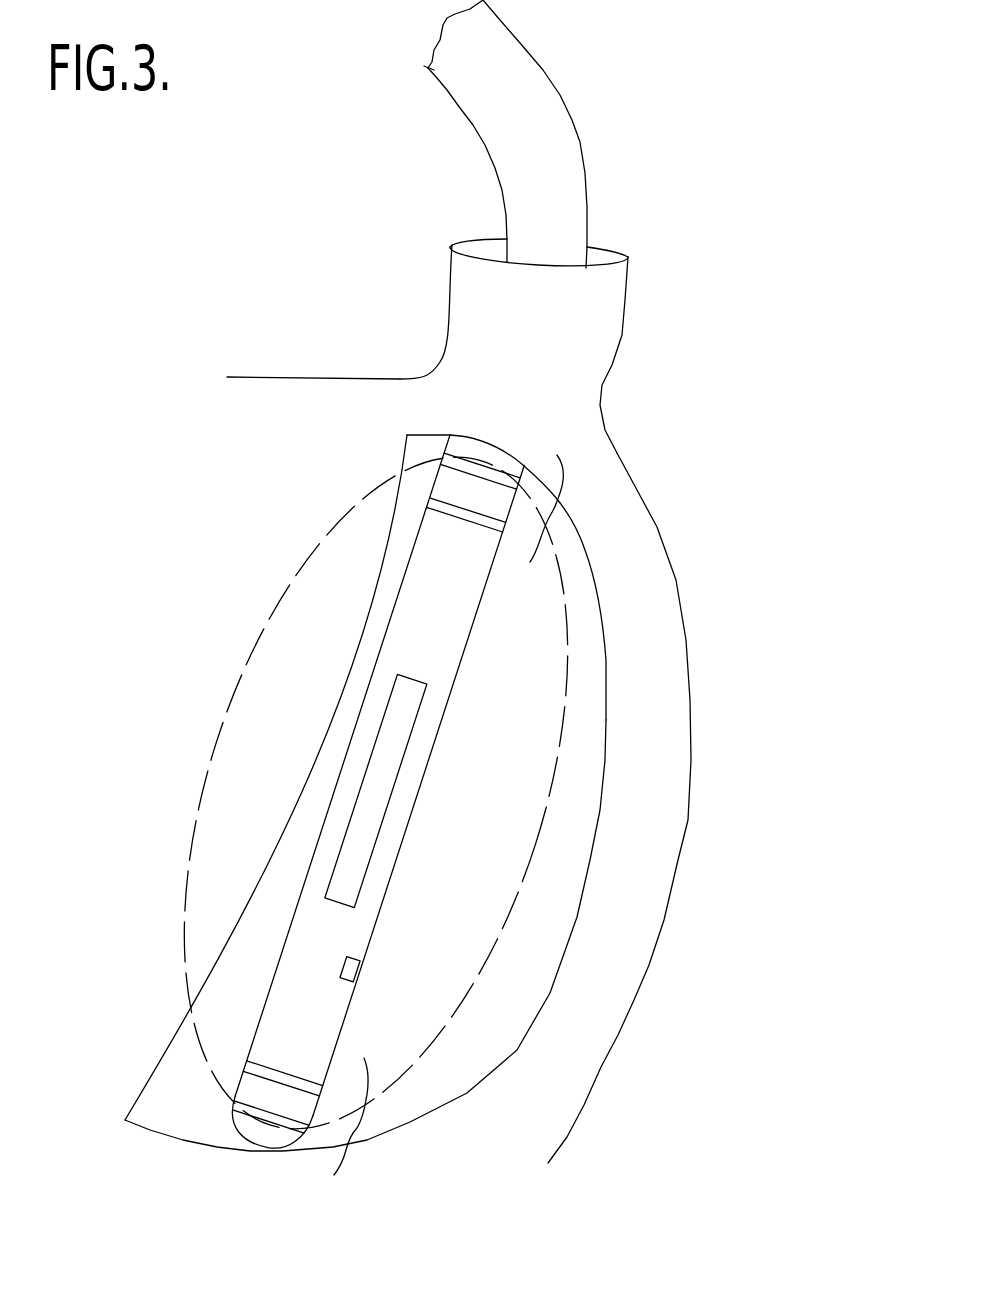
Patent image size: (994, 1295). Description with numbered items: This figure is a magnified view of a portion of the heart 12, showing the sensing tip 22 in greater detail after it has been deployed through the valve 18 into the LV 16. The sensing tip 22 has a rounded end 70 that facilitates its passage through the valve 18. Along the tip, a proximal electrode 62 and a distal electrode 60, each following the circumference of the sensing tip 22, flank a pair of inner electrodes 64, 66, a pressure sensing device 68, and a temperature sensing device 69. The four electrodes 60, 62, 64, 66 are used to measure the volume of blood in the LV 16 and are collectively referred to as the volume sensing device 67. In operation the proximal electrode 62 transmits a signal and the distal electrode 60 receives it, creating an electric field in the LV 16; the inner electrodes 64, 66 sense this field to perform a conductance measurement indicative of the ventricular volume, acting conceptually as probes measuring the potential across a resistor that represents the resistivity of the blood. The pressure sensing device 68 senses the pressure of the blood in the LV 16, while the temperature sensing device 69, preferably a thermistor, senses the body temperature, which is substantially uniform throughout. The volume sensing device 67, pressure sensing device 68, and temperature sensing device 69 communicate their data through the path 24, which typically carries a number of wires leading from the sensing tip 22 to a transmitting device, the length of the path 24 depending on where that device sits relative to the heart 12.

The heart 12 is at (348, 338).
The LV 16 is at (485, 874).
The valve 18 is at (600, 355).
The sensing tip 22 is at (250, 1025).
The path 24 is at (538, 92).
The distal electrode 60 is at (282, 1117).
The proximal electrode 62 is at (487, 467).
The inner electrode 64 is at (298, 1080).
The inner electrode 66 is at (404, 497).
The volume sensing device 67 is at (552, 514).
The pressure sensing device 68 is at (383, 773).
The temperature sensing device 69 is at (358, 970).
The rounded end 70 is at (253, 1126).